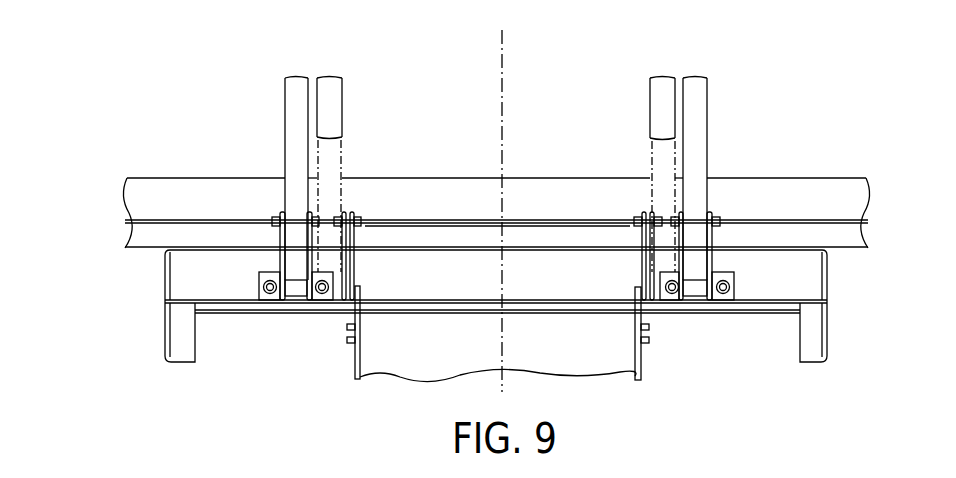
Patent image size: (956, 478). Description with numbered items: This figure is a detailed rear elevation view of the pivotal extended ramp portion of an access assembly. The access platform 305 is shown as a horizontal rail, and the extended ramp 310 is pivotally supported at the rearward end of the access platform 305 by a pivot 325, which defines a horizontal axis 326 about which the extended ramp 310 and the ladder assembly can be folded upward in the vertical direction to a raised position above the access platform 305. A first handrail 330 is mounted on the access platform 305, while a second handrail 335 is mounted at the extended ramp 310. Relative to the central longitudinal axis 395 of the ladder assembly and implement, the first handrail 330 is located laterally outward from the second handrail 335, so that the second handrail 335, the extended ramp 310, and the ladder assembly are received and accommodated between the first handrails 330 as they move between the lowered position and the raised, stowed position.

The access platform 305 is at (98, 220).
The extended ramp 310 is at (330, 377).
The pivot 325 is at (655, 222).
The horizontal axis 326 is at (580, 222).
The first handrail 330 is at (710, 123).
The second handrail 335 is at (640, 108).
The central longitudinal axis 395 is at (502, 58).